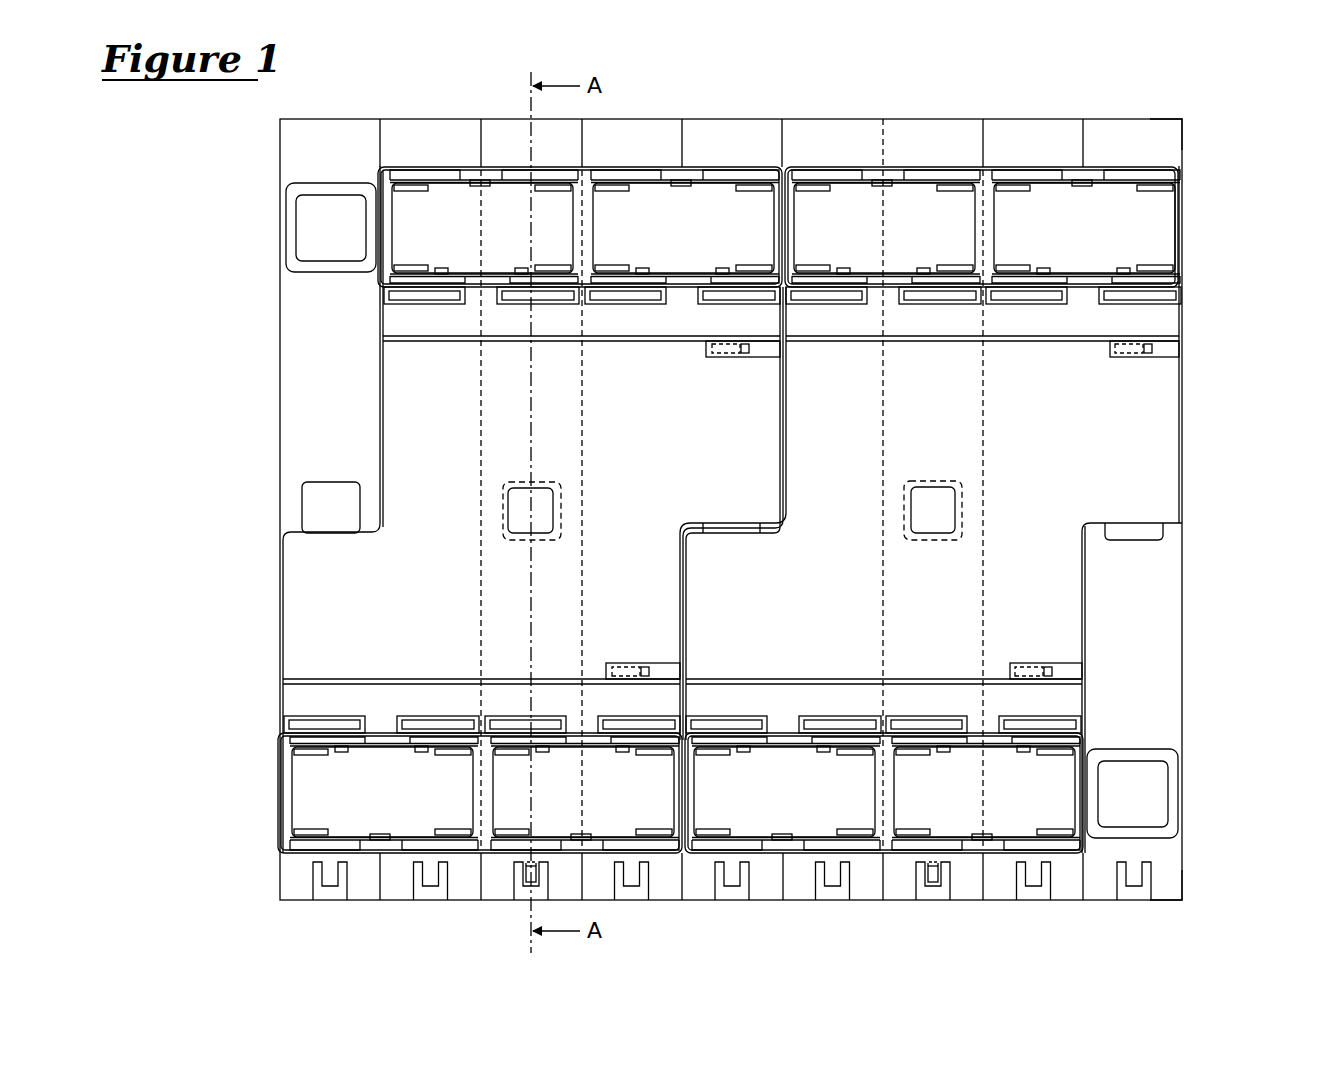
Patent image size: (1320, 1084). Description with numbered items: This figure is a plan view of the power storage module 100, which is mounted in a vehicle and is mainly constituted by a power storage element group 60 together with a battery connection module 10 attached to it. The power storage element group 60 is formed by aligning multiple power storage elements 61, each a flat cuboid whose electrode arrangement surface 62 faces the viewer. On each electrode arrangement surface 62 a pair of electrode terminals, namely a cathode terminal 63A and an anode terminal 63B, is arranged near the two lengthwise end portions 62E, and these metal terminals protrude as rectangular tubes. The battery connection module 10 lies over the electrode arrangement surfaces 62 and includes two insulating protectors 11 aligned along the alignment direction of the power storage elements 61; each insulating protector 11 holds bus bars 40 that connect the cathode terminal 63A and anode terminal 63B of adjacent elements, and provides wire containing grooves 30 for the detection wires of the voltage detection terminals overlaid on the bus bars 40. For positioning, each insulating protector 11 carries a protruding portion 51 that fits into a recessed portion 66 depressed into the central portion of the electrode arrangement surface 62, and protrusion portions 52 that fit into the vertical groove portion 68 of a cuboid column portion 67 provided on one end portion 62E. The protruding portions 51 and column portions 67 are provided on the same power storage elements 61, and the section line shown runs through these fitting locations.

The battery connection module 10 is at (1208, 250).
The insulating protector 11 is at (1022, 165).
The wire containing groove 30 is at (1156, 322).
The bus bar 40 is at (1152, 222).
The protruding portion 51 is at (957, 513).
The protrusion portion 52 is at (527, 872).
The power storage element group 60 is at (753, 100).
The power storage element 61 is at (339, 140).
The electrode arrangement surface 62 is at (1165, 618).
The end portion 62E is at (1143, 119).
The cathode terminal 63A is at (1150, 803).
The anode terminal 63B is at (312, 233).
The recessed portion 66 is at (300, 520).
The column portion 67 is at (331, 895).
The vertical groove portion 68 is at (325, 880).
The power storage module 100 is at (825, 943).